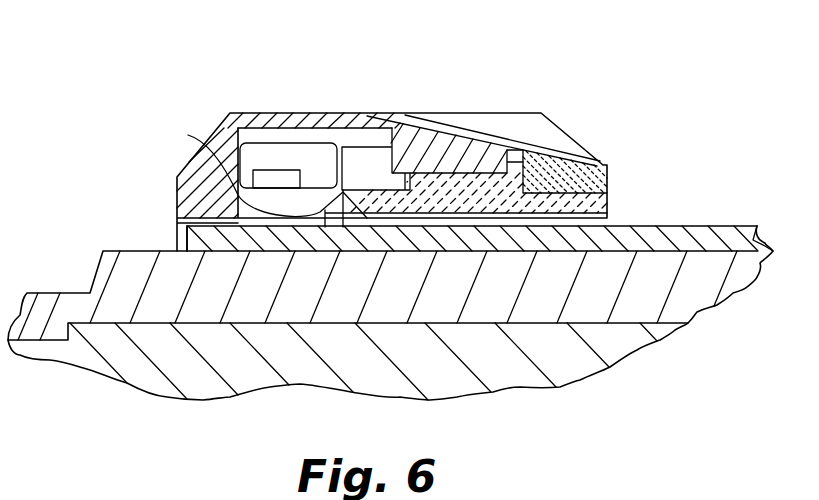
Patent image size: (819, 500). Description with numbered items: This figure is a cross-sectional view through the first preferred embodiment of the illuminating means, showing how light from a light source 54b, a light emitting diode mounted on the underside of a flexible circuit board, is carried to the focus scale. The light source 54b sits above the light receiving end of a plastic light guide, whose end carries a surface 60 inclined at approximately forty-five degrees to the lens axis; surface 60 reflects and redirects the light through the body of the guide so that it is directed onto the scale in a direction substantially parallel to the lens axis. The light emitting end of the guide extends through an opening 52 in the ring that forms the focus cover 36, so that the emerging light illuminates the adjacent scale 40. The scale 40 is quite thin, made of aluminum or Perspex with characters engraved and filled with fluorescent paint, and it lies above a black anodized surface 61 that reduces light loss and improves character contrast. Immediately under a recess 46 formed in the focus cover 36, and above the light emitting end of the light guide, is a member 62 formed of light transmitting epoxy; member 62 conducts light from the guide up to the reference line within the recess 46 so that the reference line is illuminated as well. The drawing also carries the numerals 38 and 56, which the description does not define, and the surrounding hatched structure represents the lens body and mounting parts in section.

The focus cover 36 is at (290, 117).
The gap 38 is at (695, 193).
The scale 40 is at (713, 226).
The recess 46 is at (460, 115).
The opening 52 is at (603, 218).
The light source 54b is at (362, 160).
The carrier 56 is at (243, 135).
The inclined surface 60 is at (257, 170).
The black anodized surface 61 is at (757, 226).
The light transmitting member 62 is at (602, 167).